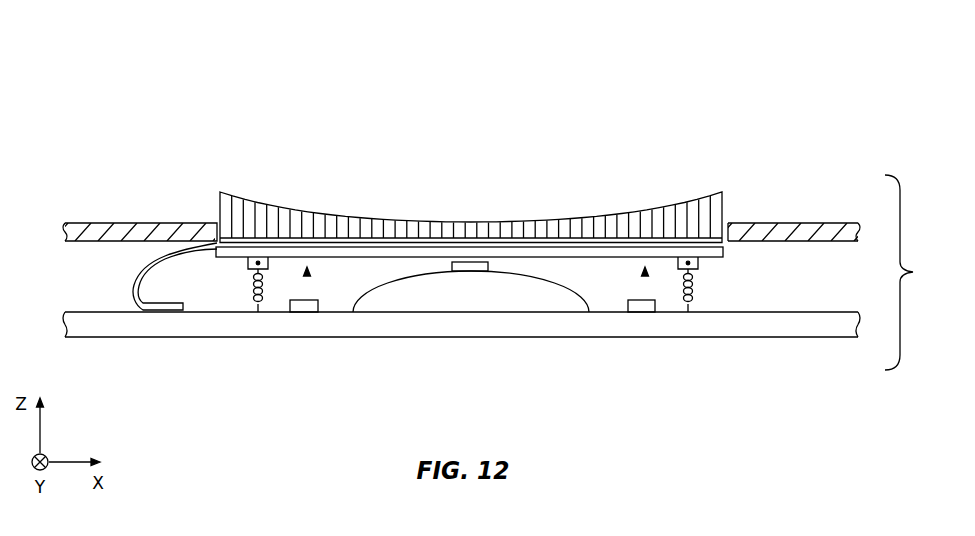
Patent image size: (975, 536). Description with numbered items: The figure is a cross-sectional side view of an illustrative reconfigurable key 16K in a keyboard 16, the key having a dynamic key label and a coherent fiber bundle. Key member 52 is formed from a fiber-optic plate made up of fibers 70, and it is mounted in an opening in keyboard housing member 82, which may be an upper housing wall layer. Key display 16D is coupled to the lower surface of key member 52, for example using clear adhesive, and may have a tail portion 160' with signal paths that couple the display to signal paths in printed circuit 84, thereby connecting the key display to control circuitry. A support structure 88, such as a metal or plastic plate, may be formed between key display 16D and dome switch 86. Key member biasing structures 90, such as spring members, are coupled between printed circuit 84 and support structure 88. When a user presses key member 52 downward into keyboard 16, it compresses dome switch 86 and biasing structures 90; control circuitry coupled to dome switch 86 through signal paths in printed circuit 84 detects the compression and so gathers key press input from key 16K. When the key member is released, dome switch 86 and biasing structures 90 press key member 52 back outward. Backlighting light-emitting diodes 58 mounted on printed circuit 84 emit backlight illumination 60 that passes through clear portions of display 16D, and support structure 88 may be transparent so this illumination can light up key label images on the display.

The reconfigurable key 16K is at (634, 92).
The keyboard housing member 82 is at (125, 231).
The key member 52 is at (211, 197).
The fibers 70 is at (705, 214).
The key display 16D is at (723, 244).
The flexible printed circuit 160' is at (139, 276).
The key member biasing structures 90 is at (245, 290).
The backlight illumination 60 is at (308, 270).
The backlighting light-emitting diodes 58 is at (280, 313).
The dome switch 86 is at (353, 313).
The support structure 88 is at (556, 258).
The printed circuit 84 is at (120, 333).
The keyboard 16 is at (911, 272).